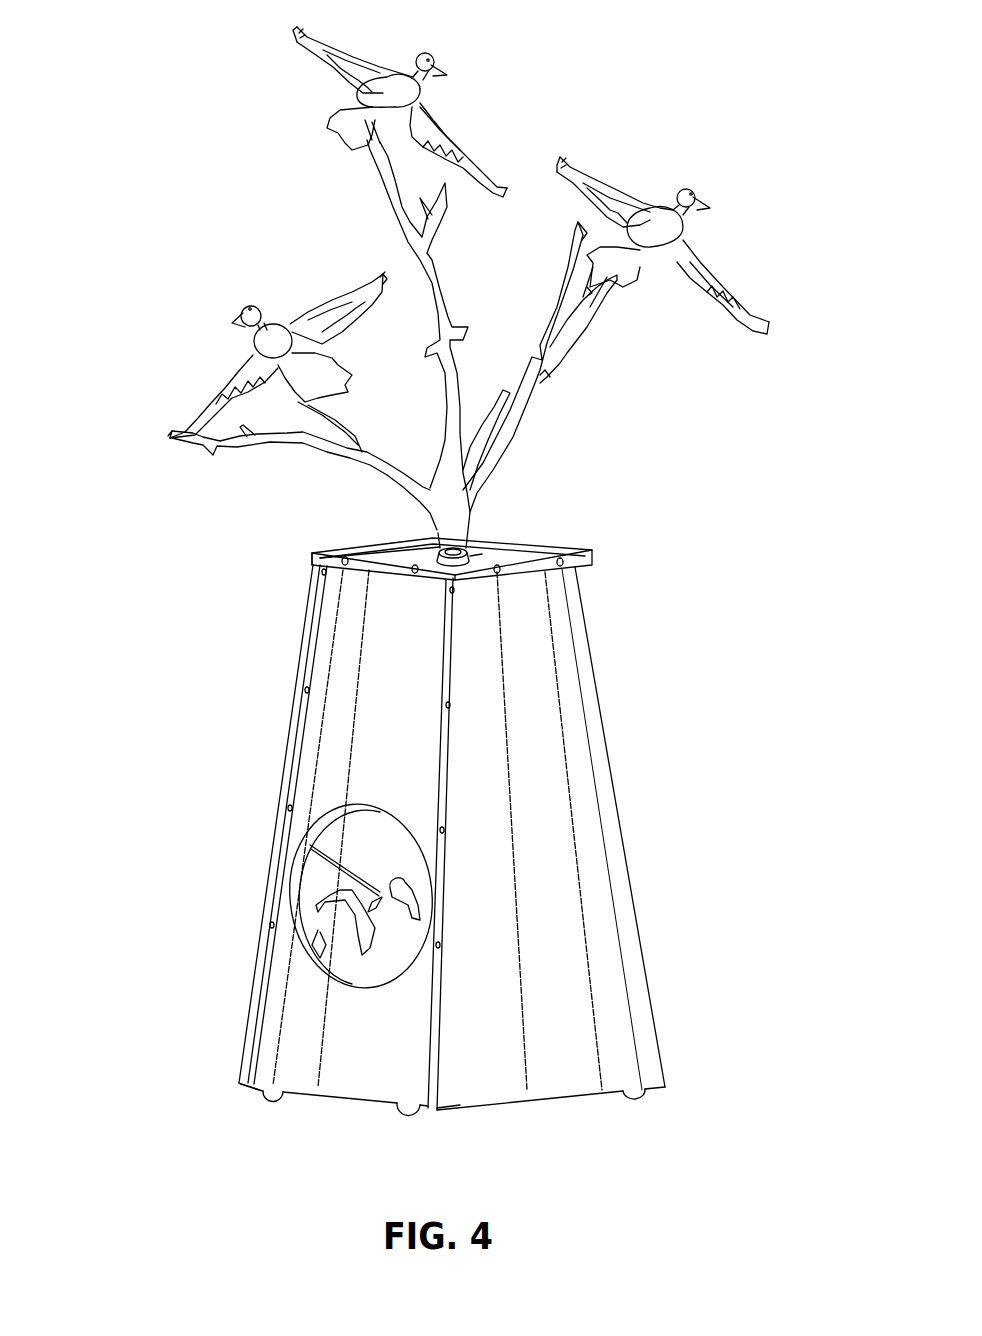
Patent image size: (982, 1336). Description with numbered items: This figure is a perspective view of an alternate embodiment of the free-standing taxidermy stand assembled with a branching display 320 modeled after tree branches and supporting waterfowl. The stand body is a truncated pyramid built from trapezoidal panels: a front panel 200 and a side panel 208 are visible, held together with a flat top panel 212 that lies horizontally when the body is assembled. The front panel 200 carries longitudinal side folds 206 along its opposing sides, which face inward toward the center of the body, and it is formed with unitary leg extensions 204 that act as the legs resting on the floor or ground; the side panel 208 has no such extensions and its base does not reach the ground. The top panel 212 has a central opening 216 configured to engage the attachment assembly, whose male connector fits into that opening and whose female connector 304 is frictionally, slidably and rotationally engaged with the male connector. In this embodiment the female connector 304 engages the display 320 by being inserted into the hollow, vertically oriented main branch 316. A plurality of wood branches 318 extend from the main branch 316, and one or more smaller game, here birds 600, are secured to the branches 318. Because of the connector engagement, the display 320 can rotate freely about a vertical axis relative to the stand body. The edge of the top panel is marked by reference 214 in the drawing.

The front panel 200 is at (335, 642).
The leg extensions 204 is at (270, 1102).
The side folds 206 is at (240, 1084).
The side panel 208 is at (606, 919).
The top panel 212 is at (570, 548).
The top plate edge 214 is at (310, 556).
The central opening 216 is at (483, 552).
The female connector 304 is at (476, 542).
The main branch 316 is at (453, 514).
The branches 318 is at (393, 230).
The display 320 is at (597, 350).
The birds 600 is at (330, 120).